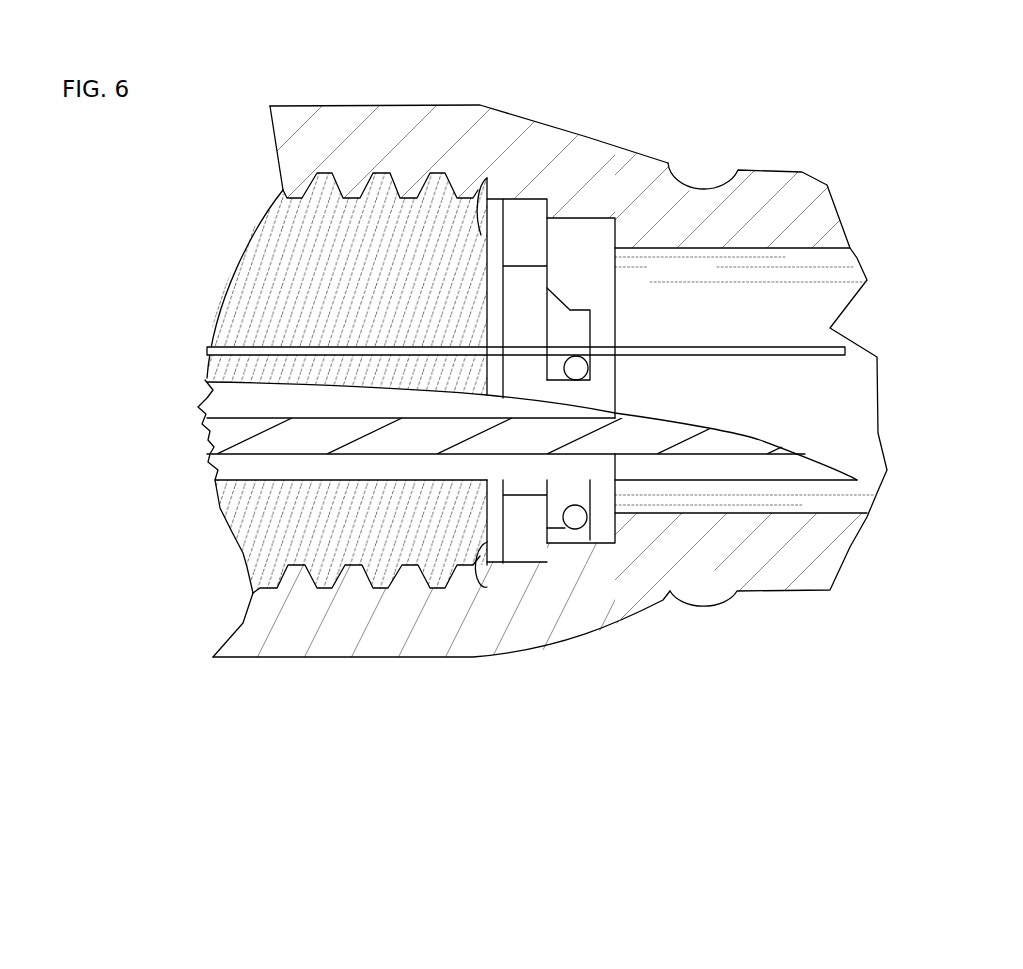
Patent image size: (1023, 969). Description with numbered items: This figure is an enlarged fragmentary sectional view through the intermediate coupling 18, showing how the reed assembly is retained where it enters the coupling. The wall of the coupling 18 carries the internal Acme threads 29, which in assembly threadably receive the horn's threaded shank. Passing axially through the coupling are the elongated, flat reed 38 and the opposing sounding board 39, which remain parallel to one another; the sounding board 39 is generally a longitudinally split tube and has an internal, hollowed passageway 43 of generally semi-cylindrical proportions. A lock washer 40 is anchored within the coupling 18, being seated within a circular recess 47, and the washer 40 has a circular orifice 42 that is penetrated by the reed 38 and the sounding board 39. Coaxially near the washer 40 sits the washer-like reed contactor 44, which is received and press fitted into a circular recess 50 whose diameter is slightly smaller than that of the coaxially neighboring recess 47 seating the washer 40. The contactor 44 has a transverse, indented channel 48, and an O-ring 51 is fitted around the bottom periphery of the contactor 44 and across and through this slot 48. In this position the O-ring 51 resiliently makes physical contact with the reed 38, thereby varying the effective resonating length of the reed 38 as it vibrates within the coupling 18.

The coupling 18 is at (417, 135).
The internal Acme threads 29 is at (440, 363).
The reed 38 is at (797, 347).
The sounding board 39 is at (717, 447).
The lock washer 40 is at (527, 537).
The circular orifice 42 is at (523, 302).
The hollowed passageway 43 is at (232, 403).
The reed contactor 44 is at (622, 547).
The circular recess 47 is at (479, 545).
The indented channel 48 is at (575, 328).
The circular recess 50 is at (596, 538).
The O-ring 51 is at (580, 363).